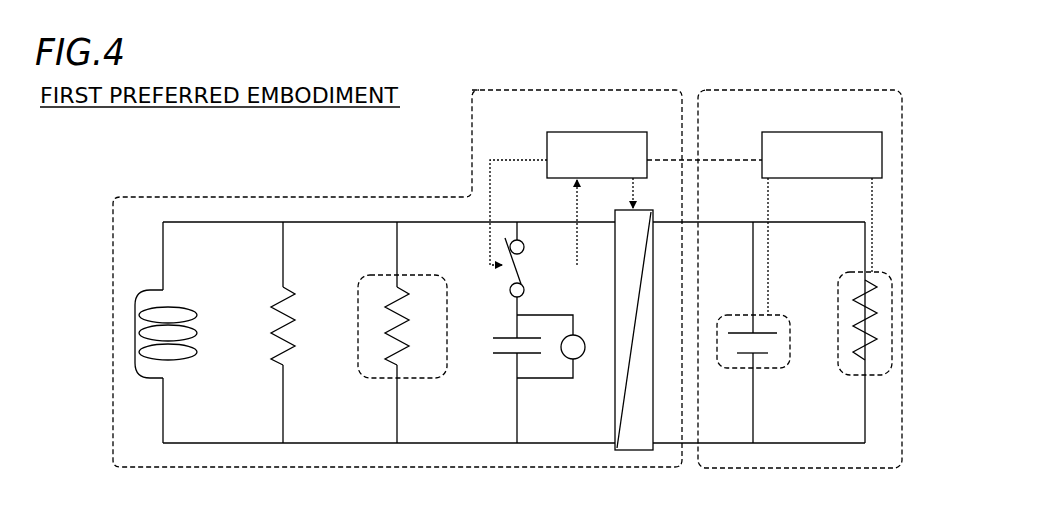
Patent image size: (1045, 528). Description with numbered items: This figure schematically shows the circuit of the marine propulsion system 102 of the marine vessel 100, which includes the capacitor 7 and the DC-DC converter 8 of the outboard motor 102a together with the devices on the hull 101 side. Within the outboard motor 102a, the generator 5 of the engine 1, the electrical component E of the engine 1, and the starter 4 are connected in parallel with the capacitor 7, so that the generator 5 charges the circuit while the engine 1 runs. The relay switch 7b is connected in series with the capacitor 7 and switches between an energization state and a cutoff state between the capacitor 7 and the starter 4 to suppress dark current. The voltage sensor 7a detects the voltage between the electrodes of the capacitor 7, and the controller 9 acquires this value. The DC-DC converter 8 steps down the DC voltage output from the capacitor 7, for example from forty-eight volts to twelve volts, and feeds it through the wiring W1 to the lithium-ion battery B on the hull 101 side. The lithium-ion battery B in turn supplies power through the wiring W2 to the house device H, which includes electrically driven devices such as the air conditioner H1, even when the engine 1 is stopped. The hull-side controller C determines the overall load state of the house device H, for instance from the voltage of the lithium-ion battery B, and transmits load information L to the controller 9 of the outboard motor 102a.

The marine vessel 100 is at (122, 148).
The marine propulsion system 102 is at (143, 183).
The hull 101 is at (855, 468).
The outboard motor 102a is at (625, 467).
The generator 5 is at (170, 309).
The electrical component E is at (296, 311).
The engine 1 is at (388, 276).
The starter 4 is at (410, 312).
The capacitor 7 is at (508, 330).
The voltage sensor 7a is at (576, 362).
The relay switch 7b is at (522, 286).
The controller 9 is at (620, 132).
The DC-DC converter 8 is at (612, 455).
The load information L is at (704, 150).
The controller C is at (836, 132).
The wiring W1 is at (730, 223).
The wiring W2 is at (811, 223).
The lithium-ion battery B is at (770, 331).
The house device H is at (886, 268).
The air conditioner H1 is at (882, 300).